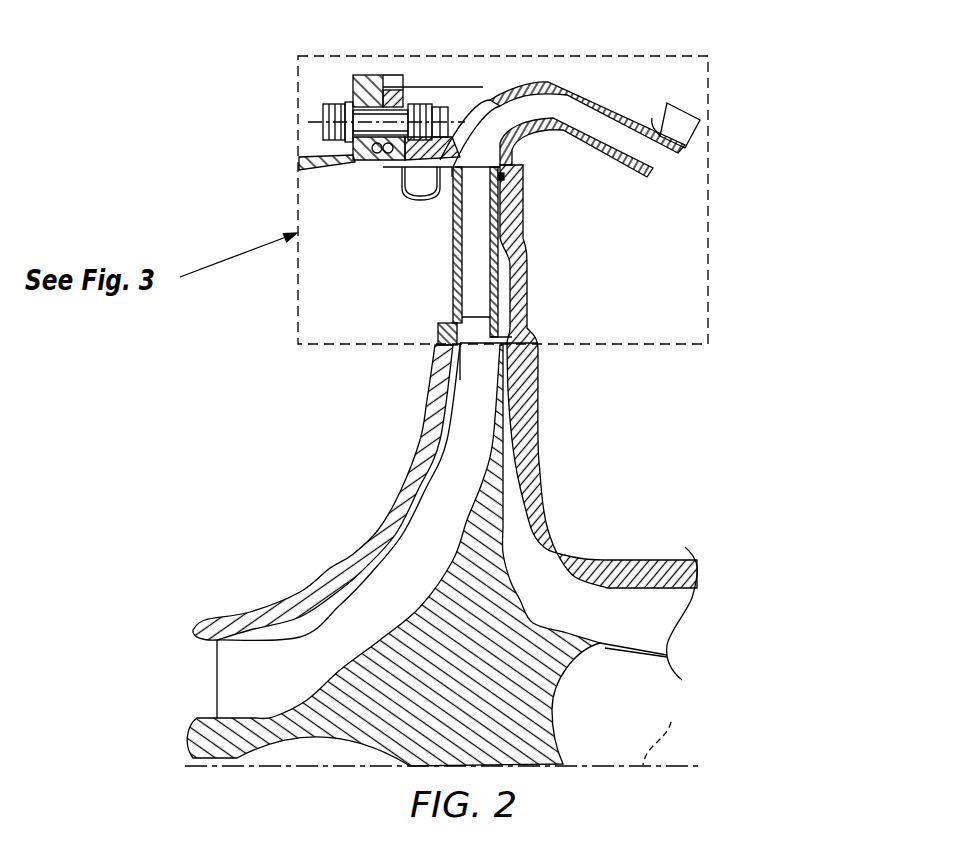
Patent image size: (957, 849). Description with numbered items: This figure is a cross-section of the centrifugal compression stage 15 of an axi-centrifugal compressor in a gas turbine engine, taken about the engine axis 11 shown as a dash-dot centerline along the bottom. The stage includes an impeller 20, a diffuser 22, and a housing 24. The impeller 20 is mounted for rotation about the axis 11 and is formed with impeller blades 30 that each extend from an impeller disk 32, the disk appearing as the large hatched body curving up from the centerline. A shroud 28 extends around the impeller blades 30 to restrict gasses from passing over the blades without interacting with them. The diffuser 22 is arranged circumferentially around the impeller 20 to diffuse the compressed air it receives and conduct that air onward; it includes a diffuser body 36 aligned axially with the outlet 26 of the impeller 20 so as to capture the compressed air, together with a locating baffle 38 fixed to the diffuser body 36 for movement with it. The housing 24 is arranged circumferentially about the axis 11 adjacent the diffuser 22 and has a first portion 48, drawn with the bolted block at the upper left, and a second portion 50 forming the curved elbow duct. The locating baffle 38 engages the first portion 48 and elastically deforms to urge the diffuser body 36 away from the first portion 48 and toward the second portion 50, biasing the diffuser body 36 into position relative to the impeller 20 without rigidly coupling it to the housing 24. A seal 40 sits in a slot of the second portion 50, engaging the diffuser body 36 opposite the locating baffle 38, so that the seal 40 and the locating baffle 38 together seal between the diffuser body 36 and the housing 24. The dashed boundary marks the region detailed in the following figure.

The axis 11 is at (664, 731).
The centrifugal compression stage 15 is at (216, 86).
The impeller 20 is at (163, 535).
The diffuser 22 is at (350, 280).
The housing 24 is at (548, 66).
The outlet 26 is at (458, 338).
The shroud 28 is at (398, 496).
The impeller blades 30 is at (213, 673).
The impeller disk 32 is at (386, 676).
The diffuser body 36 is at (440, 273).
The locating baffle 38 is at (401, 195).
The seal 40 is at (503, 176).
The first portion of the housing 48 is at (413, 74).
The second portion of the housing 50 is at (528, 144).